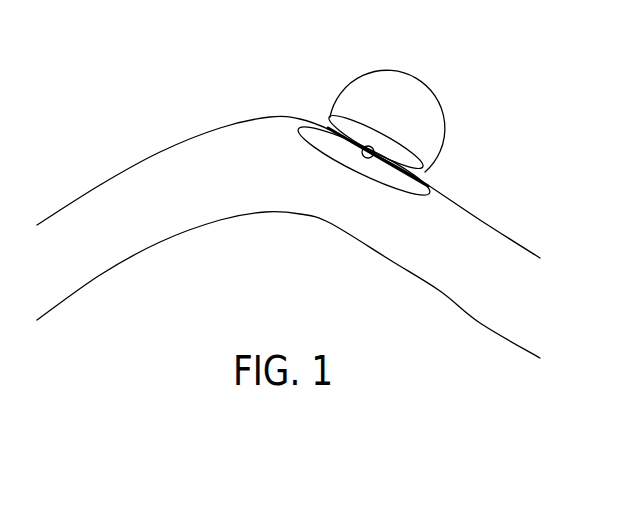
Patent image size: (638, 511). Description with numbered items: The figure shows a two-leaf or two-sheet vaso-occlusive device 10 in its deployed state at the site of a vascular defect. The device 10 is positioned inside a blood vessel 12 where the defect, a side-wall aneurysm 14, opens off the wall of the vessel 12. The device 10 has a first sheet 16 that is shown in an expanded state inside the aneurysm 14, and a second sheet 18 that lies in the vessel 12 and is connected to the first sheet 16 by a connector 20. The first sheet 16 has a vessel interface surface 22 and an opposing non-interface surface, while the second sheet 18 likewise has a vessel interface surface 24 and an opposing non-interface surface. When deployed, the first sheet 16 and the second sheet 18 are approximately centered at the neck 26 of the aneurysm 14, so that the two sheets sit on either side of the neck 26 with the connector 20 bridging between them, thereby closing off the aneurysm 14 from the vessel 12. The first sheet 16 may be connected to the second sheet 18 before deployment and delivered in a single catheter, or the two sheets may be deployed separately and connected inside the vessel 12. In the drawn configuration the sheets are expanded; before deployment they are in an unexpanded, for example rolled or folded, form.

The vaso-occlusive device 10 is at (472, 120).
The blood vessel 12 is at (518, 248).
The side-wall aneurysm 14 is at (376, 67).
The first sheet 16 is at (386, 131).
The second sheet 18 is at (372, 176).
The connector 20 is at (356, 168).
The vessel interface surface 22 is at (411, 188).
The vessel interface surface 24 is at (337, 146).
The neck 26 is at (325, 124).